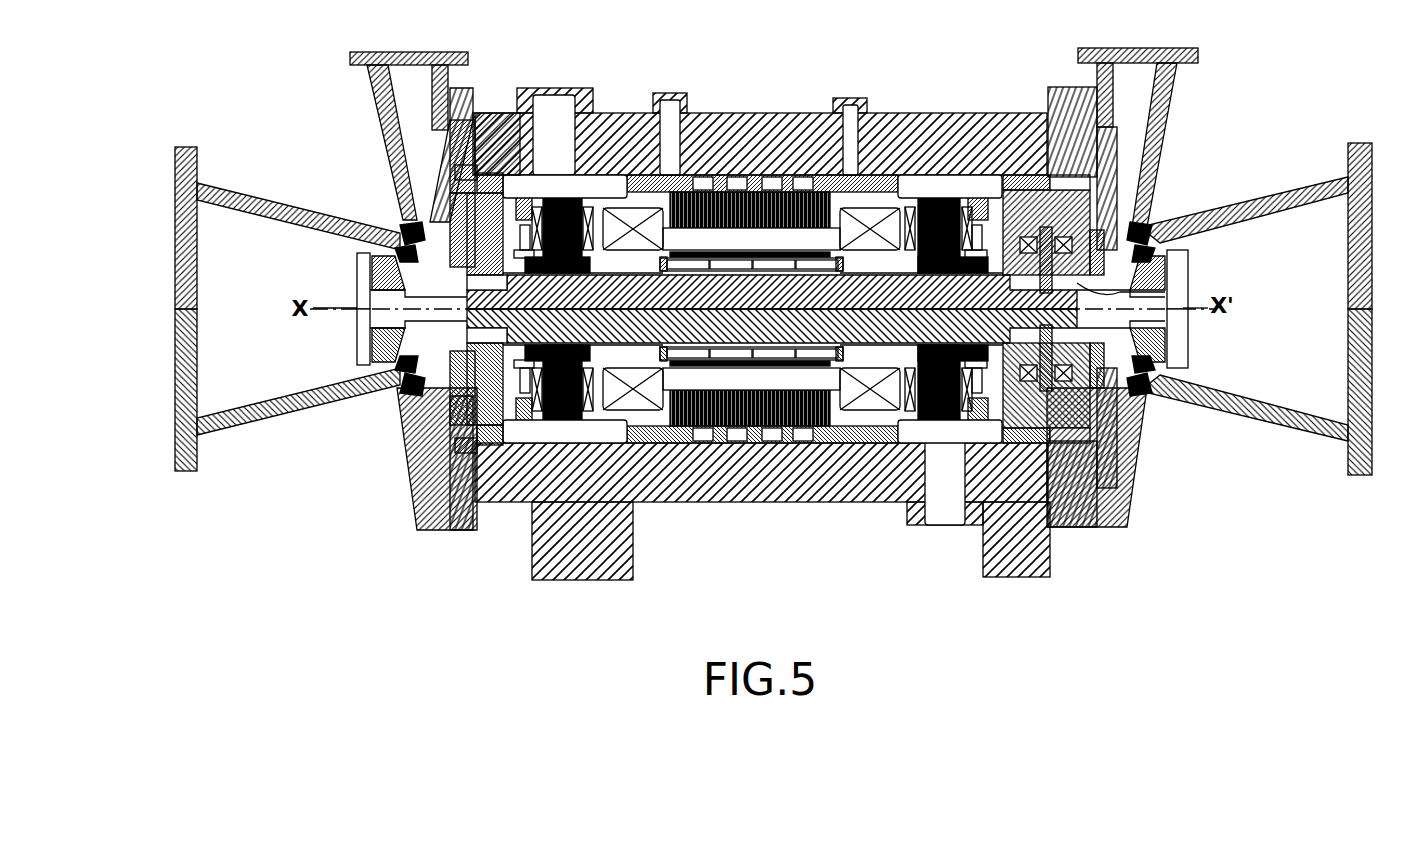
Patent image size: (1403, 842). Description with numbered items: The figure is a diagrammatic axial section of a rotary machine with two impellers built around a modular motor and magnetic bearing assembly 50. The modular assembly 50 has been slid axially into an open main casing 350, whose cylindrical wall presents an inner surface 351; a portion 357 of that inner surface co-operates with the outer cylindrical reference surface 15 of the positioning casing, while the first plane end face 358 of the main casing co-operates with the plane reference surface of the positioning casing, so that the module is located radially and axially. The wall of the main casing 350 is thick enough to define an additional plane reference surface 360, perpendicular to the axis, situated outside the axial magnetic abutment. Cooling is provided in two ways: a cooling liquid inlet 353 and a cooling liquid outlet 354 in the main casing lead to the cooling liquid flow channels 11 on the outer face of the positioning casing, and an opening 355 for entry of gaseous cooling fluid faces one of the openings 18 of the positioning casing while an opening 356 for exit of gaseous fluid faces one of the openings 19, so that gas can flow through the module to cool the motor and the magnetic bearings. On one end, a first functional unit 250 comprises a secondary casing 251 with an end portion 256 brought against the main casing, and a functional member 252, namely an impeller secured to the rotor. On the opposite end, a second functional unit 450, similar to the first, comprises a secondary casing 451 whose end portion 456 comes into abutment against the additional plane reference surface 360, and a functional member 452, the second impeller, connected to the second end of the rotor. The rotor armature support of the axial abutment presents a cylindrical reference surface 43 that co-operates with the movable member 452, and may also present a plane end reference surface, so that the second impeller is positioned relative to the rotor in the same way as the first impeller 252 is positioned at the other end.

The cooling liquid flow channels 11 is at (740, 172).
The outer cylindrical reference surface 15 is at (493, 477).
The openings for entry of gaseous cooling fluid 18 is at (622, 187).
The openings for exit of gaseous cooling fluid 19 is at (873, 175).
The cylindrical reference surface 43 is at (1090, 293).
The modular motor and magnetic bearing assembly 50 is at (960, 180).
The first functional unit 250 is at (293, 430).
The secondary casing 251 is at (240, 196).
The functional member 252 is at (357, 280).
The end portion of the secondary casing 256 is at (470, 90).
The main casing 350 is at (956, 112).
The inner surface 351 is at (587, 183).
The cooling liquid inlet 353 is at (668, 113).
The cooling liquid outlet 354 is at (848, 112).
The opening for entry of gaseous cooling fluid 355 is at (541, 107).
The opening for exit of gaseous cooling fluid 356 is at (932, 517).
The portion of the inner surface 357 is at (477, 173).
The first plane end face 358 is at (497, 112).
The additional plane reference surface 360 is at (1050, 147).
The second functional unit 450 is at (1258, 418).
The secondary casing 451 is at (1290, 192).
The functional member 452 is at (1190, 333).
The end portion of the secondary casing 456 is at (1047, 97).